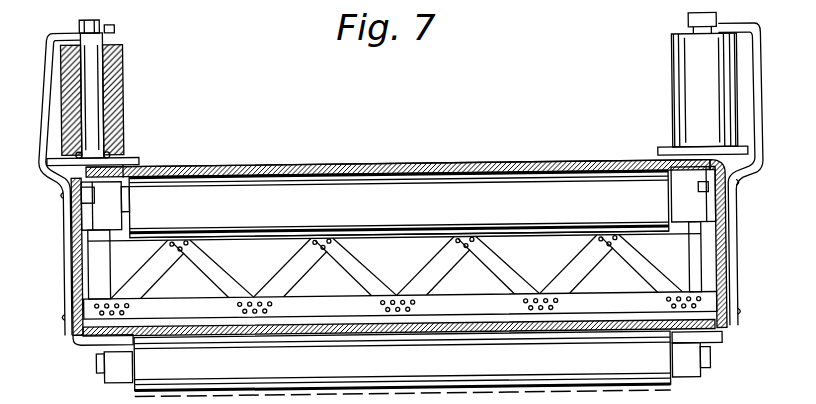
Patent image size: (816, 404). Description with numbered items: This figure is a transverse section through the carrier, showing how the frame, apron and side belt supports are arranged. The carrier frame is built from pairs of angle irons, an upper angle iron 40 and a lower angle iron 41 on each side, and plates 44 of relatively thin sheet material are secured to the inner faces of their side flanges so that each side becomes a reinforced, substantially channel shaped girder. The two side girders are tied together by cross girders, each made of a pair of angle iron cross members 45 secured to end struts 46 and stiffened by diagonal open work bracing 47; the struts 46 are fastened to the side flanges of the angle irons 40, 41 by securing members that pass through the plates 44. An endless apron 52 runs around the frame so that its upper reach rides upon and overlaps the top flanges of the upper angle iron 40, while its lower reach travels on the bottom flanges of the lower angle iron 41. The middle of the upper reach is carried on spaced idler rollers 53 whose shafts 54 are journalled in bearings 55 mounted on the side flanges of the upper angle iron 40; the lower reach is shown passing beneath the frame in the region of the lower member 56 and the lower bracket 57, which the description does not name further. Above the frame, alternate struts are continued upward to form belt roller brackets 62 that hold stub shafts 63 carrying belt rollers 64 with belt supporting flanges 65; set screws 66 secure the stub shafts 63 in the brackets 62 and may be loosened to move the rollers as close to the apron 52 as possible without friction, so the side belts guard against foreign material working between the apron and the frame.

The upper angle iron 40 is at (124, 161).
The lower angle iron 41 is at (80, 341).
The plate 44 is at (82, 277).
The angle iron cross member 45 is at (295, 317).
The end strut 46 is at (96, 246).
The diagonal open work bracing 47 is at (437, 265).
The endless apron 52 is at (316, 170).
The idler roller 53 is at (399, 204).
The shaft 54 is at (128, 211).
The bearing 55 is at (105, 215).
The lower beam 56 is at (402, 364).
The lower block 57 is at (137, 364).
The belt roller bracket 62 is at (51, 62).
The stub shaft 63 is at (92, 73).
The belt roller 64 is at (119, 98).
The belt supporting flange 65 is at (139, 164).
The set screw 66 is at (118, 28).